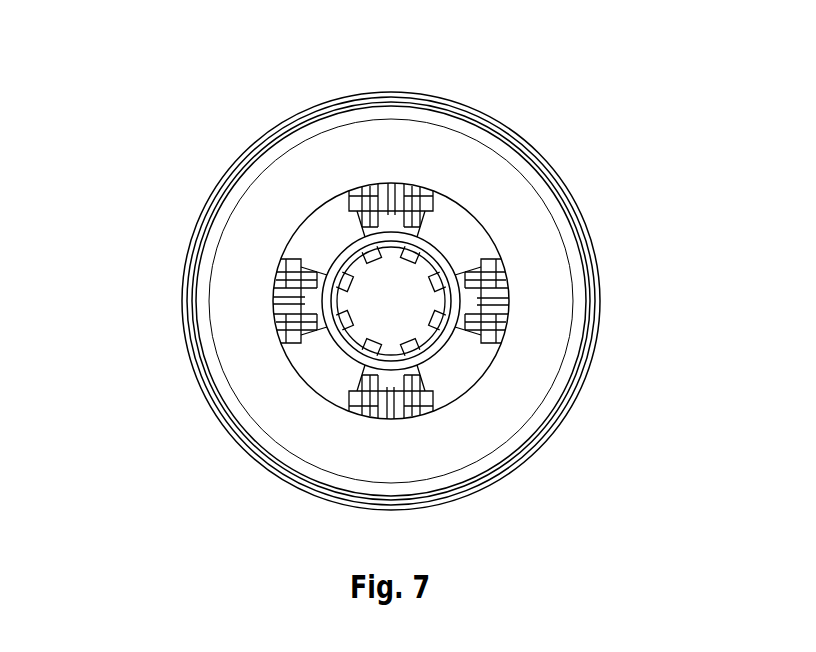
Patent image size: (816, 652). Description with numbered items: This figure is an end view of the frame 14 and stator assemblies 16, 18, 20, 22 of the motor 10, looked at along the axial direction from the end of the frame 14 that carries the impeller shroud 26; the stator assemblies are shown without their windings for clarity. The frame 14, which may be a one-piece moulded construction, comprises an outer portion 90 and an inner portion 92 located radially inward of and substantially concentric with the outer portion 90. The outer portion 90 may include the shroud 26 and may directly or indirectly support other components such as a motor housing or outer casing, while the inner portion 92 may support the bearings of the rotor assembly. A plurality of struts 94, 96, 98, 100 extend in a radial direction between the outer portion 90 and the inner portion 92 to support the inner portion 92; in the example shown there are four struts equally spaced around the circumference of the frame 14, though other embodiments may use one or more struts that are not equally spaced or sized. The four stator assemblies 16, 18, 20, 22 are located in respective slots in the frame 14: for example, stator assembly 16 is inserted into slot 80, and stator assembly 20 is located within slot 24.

The motor 10 is at (166, 166).
The frame 14 is at (583, 208).
The stator assembly 16 is at (288, 322).
The stator assembly 18 is at (428, 198).
The stator assembly 20 is at (495, 342).
The stator assembly 22 is at (433, 403).
The slot 24 is at (462, 253).
The impeller shroud 26 is at (513, 413).
The slot 80 is at (317, 263).
The outer portion 90 is at (308, 157).
The inner portion 92 is at (350, 353).
The strut 94 is at (270, 300).
The strut 96 is at (392, 192).
The strut 98 is at (512, 302).
The strut 100 is at (377, 423).